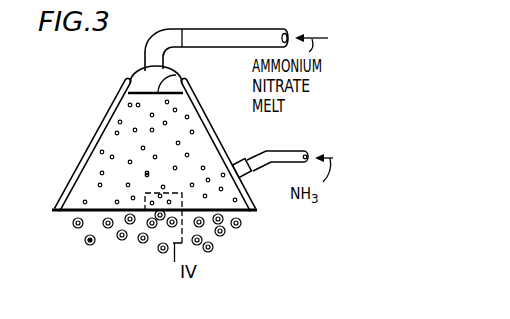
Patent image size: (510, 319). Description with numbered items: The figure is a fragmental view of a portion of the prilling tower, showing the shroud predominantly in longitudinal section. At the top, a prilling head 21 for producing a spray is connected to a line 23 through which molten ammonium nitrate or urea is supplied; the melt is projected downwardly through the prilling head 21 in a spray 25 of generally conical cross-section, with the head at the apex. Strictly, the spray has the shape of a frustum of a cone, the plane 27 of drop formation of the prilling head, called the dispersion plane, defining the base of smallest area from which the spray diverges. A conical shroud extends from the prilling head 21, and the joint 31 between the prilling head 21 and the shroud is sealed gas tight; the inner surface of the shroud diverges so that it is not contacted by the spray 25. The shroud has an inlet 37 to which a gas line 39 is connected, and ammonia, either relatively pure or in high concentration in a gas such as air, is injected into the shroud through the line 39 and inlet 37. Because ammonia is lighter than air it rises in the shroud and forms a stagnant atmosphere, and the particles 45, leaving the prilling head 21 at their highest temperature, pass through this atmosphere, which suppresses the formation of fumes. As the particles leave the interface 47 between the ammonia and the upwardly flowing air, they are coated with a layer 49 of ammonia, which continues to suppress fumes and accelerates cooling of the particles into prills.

The prilling head 21 is at (138, 72).
The line 23 is at (188, 29).
The spray 25 is at (122, 111).
The plane of drop formation 27 is at (169, 78).
The joint 31 is at (126, 80).
The inlet 37 is at (227, 160).
The gas line 39 is at (278, 152).
The particles 45 is at (101, 170).
The interface 47 is at (118, 214).
The layer of ammonia 49 is at (155, 225).